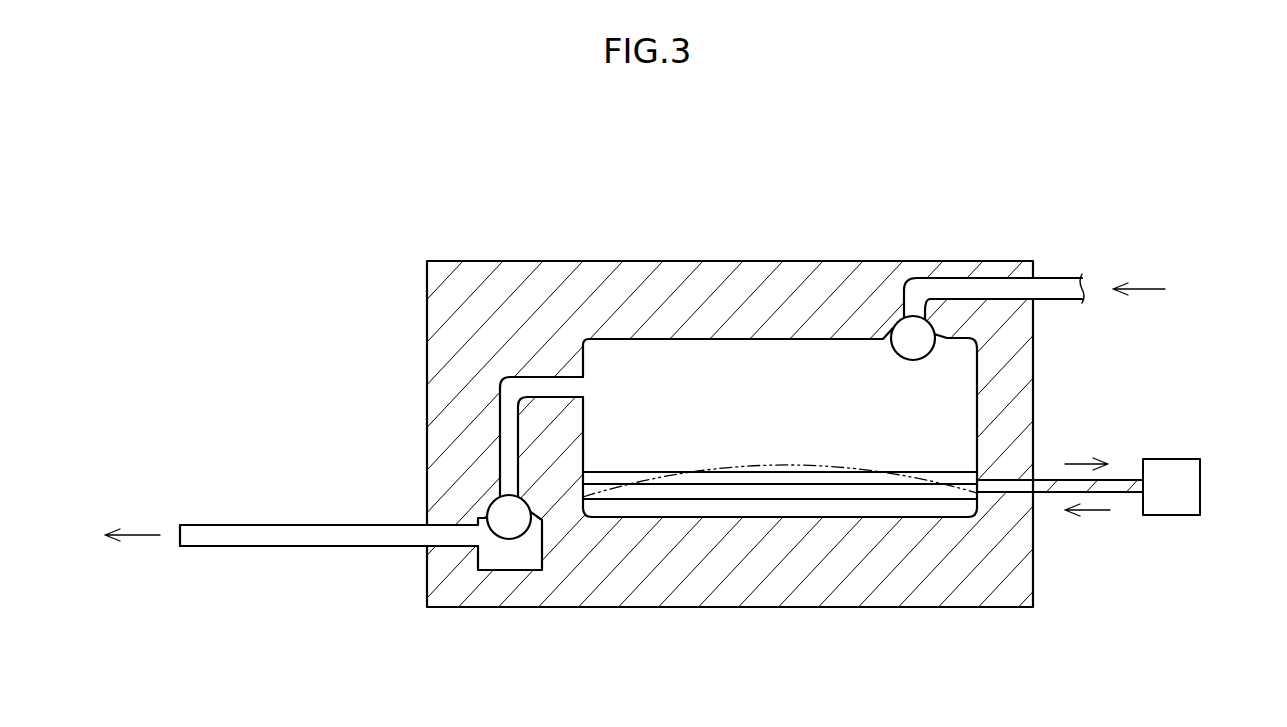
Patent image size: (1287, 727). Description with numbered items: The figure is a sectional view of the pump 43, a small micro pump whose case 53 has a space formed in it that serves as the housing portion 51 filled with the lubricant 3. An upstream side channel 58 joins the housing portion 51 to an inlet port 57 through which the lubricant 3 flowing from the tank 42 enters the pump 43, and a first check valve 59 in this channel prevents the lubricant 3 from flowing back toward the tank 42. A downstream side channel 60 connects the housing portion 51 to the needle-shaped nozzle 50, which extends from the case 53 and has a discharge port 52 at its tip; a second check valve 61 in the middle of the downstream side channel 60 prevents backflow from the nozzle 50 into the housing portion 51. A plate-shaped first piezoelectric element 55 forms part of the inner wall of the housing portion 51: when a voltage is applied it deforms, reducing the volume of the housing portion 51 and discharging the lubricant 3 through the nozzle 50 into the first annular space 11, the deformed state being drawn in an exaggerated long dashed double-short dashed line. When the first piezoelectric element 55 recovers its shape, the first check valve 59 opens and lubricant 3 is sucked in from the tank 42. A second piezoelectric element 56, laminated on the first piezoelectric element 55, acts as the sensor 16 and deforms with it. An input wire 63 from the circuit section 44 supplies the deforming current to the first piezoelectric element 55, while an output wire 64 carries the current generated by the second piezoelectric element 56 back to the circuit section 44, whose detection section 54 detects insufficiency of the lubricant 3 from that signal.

The lubricant 3 is at (769, 427).
The first annular space 11 is at (48, 549).
The sensor 16 is at (780, 564).
The tank 42 is at (1183, 303).
The pump 43 is at (706, 391).
The circuit section 44 is at (1207, 444).
The nozzle 50 is at (240, 535).
The housing portion 51 is at (677, 375).
The discharge port 52 is at (182, 536).
The case 53 is at (503, 332).
The detection section 54 is at (1206, 450).
The first piezoelectric element 55 is at (783, 492).
The second piezoelectric element 56 is at (857, 478).
The inlet port 57 is at (1040, 299).
The upstream side channel 58 is at (985, 278).
The first check valve 59 is at (937, 356).
The downstream side channel 60 is at (510, 448).
The second check valve 61 is at (520, 535).
The input wire 63 is at (1127, 495).
The output wire 64 is at (1127, 478).